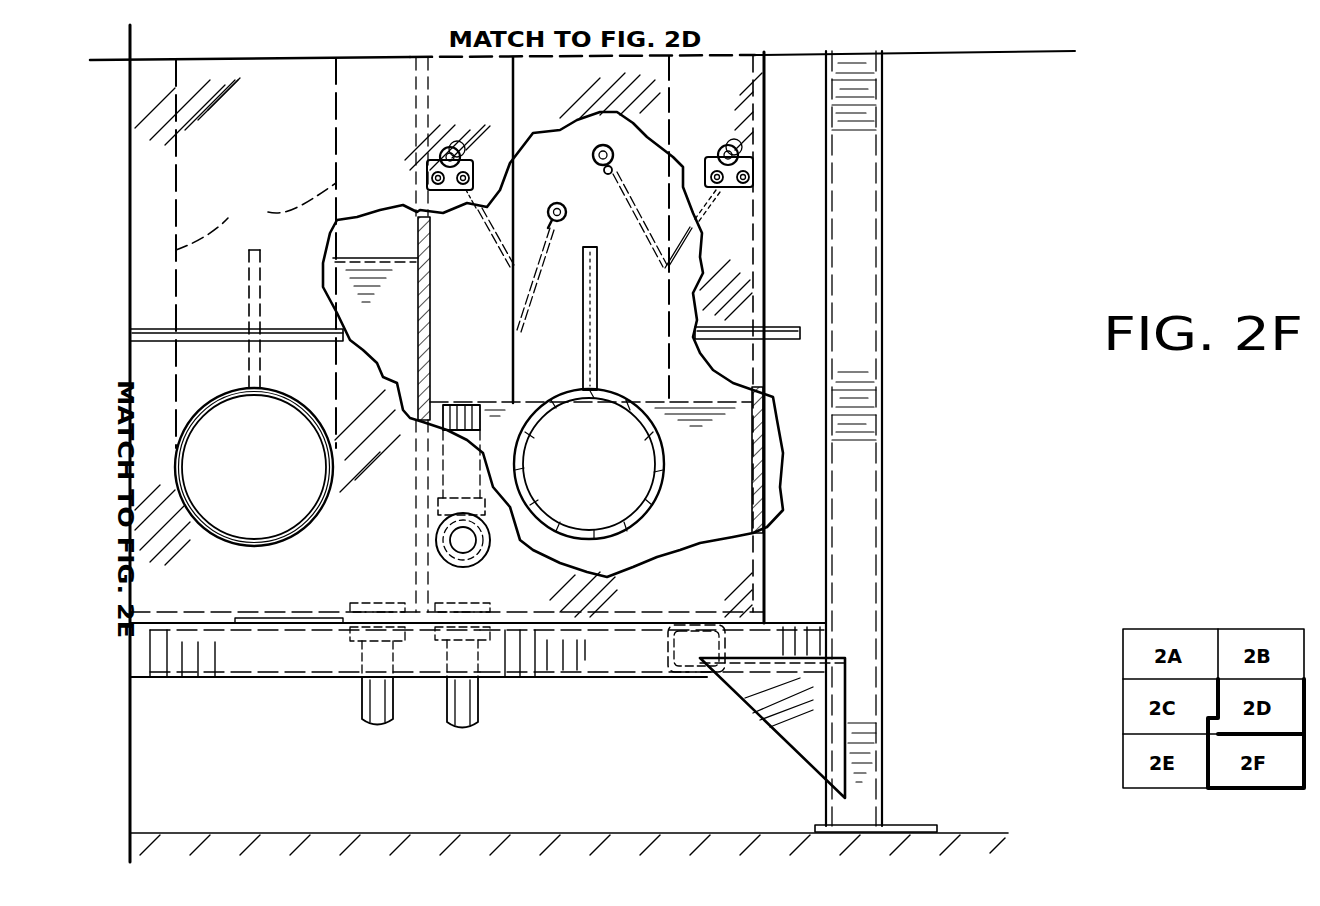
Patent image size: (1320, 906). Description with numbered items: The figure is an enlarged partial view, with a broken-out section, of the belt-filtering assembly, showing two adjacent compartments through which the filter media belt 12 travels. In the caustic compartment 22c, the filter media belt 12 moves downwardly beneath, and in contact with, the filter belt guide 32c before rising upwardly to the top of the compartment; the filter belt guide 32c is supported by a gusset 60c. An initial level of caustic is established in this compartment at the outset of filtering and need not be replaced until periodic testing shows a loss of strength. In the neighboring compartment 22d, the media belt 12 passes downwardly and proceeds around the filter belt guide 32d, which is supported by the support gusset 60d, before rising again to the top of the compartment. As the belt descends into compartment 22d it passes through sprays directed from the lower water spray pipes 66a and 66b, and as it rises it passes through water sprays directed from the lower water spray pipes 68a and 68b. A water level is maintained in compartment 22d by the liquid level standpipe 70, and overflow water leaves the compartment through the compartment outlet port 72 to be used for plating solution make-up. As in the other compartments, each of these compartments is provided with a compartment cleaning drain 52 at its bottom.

The filter media belt 12 is at (668, 325).
The caustic compartment 22c is at (322, 548).
The compartment 22d is at (670, 573).
The filter belt guide 32c is at (270, 531).
The filter belt guide 32d is at (618, 522).
The compartment cleaning drain 52 is at (360, 710).
The gusset 60c is at (249, 252).
The support gusset 60d is at (582, 288).
The lower water spray pipe 66a is at (450, 153).
The lower water spray pipe 66b is at (557, 205).
The lower water spray pipe 68a is at (606, 174).
The lower water spray pipe 68b is at (728, 147).
The liquid level standpipe 70 is at (487, 412).
The compartment outlet port 72 is at (488, 549).